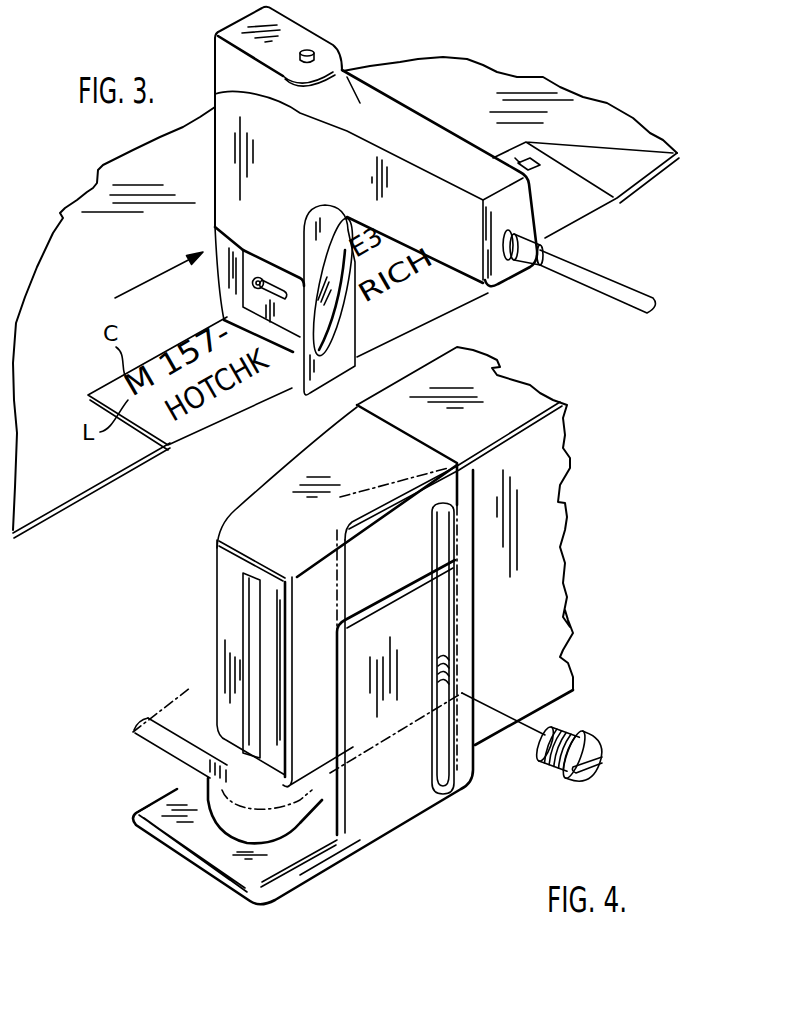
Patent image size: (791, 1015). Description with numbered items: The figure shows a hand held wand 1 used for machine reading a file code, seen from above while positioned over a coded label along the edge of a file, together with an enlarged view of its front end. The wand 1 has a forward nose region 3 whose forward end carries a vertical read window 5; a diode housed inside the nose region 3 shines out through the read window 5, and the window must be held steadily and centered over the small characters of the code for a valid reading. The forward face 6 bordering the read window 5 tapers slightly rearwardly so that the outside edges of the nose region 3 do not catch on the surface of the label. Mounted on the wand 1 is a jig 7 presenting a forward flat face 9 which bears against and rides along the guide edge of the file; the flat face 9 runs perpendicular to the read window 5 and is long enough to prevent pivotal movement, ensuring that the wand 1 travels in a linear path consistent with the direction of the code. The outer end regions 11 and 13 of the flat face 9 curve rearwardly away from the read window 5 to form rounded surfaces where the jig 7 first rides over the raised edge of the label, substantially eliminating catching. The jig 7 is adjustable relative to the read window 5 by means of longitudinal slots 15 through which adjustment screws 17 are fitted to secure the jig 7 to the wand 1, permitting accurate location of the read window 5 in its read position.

In FIG. 3, the wand 1 is at (443, 143).
In FIG. 4, the forward nose region 3 is at (317, 596).
In FIG. 4, the read window 5 is at (253, 612).
In FIG. 4, the forward face 6 is at (277, 636).
In FIG. 4, the jig 7 is at (446, 642).
In FIG. 3, the flat face 9 is at (353, 363).
In FIG. 4, the flat face 9 is at (270, 721).
In FIG. 4, the outer end region 11 is at (143, 805).
In FIG. 4, the outer end region 13 is at (332, 857).
In FIG. 4, the longitudinal slots 15 is at (458, 771).
In FIG. 4, the adjustment screws 17 is at (599, 740).